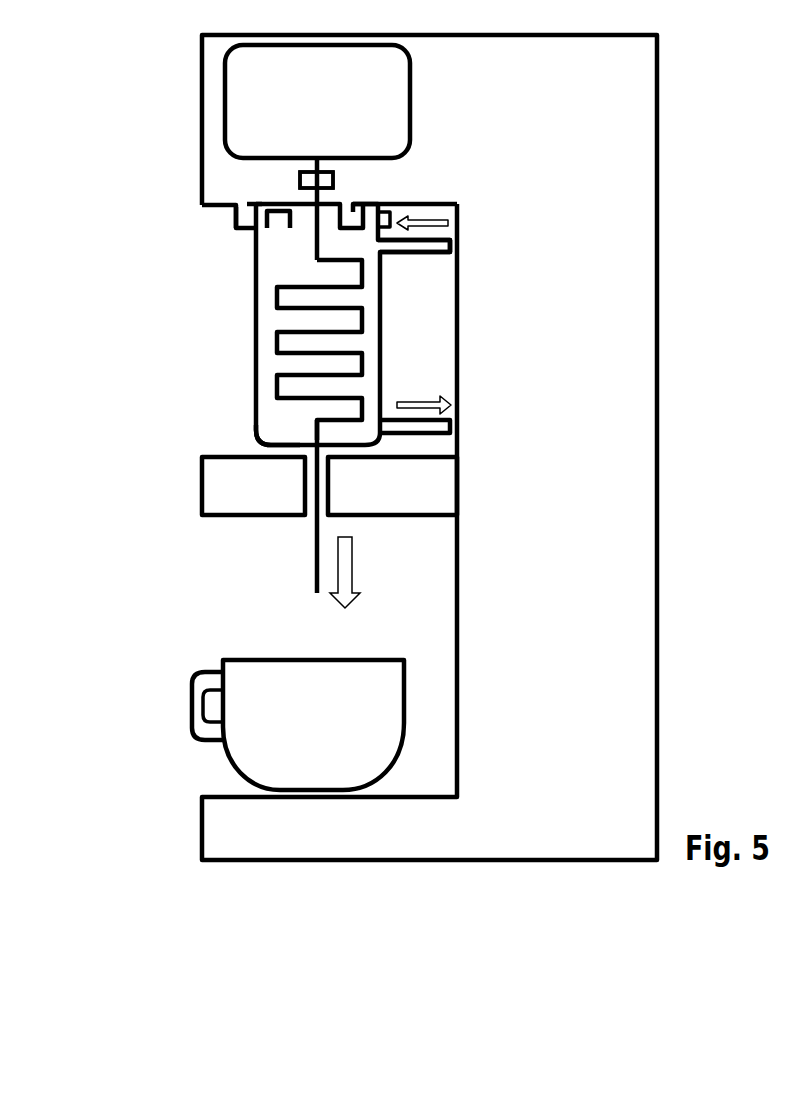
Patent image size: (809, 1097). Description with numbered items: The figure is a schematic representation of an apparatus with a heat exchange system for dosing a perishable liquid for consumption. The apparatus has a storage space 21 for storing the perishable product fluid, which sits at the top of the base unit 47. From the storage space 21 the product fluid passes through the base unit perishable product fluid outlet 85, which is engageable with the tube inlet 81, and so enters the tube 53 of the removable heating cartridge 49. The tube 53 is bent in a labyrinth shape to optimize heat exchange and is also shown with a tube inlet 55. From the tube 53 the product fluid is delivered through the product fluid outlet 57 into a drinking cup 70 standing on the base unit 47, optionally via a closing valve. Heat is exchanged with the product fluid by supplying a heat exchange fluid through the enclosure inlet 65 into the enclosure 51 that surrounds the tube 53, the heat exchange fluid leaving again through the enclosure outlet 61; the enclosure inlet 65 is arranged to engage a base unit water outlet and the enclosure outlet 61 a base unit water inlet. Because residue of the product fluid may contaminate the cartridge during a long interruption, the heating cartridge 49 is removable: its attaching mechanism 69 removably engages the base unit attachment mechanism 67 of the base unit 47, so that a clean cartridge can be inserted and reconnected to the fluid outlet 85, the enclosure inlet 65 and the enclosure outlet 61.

The storage space 21 is at (393, 117).
The base unit 47 is at (642, 328).
The removable heating cartridge 49 is at (243, 373).
The enclosure 51 is at (258, 428).
The tube 53 is at (278, 342).
The tube inlet 55 is at (312, 221).
The product fluid outlet 57 is at (308, 552).
The enclosure outlet 61 is at (452, 428).
The enclosure inlet 65 is at (452, 247).
The base unit attachment mechanism 67 is at (243, 207).
The attaching mechanism 69 is at (257, 205).
The drinking cup 70 is at (367, 727).
The tube inlet 81 is at (333, 182).
The base unit perishable product fluid outlet 85 is at (316, 180).